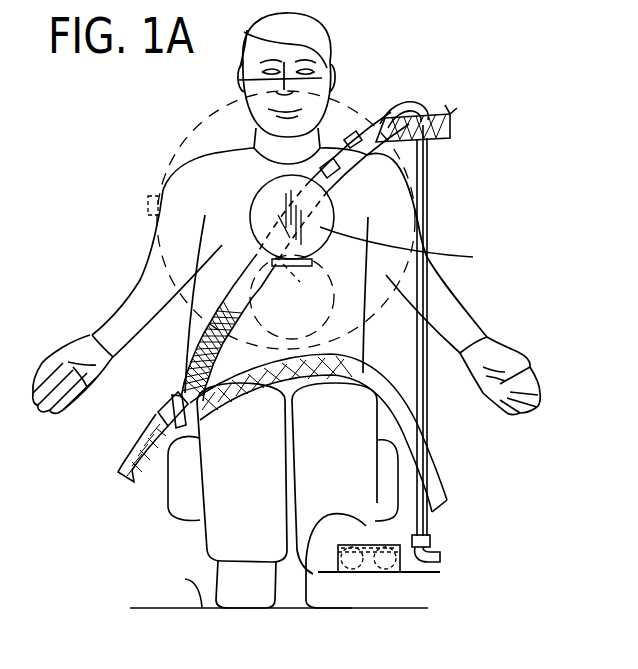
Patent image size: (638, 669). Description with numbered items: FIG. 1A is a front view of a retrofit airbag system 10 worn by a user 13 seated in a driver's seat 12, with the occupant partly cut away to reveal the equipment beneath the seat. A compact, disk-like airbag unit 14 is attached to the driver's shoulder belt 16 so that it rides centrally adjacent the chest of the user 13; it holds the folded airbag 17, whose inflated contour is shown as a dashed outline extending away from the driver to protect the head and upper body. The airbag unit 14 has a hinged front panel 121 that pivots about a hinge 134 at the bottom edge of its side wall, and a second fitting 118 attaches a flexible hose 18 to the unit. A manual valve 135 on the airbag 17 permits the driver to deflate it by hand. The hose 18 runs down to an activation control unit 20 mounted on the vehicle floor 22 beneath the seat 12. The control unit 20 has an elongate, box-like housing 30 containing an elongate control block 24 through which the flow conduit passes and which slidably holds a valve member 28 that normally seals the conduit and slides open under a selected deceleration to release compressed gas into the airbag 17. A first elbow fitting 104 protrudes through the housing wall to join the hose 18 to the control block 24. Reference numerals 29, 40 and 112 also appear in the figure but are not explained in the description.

The airbag system 10 is at (393, 88).
The driver's seat 12 is at (168, 503).
The user 13 is at (318, 27).
The airbag unit 14 is at (256, 204).
The shoulder belt 16 is at (431, 108).
The airbag 17 is at (175, 126).
The flexible hose 18 is at (430, 160).
The activation control unit 20 is at (347, 545).
The vehicle floor 22 is at (176, 584).
The control block 24 is at (361, 572).
The valve member 28 is at (392, 572).
The controller 29 is at (336, 548).
The housing 30 is at (352, 542).
The base plate 40 is at (402, 572).
The first elbow fitting 104 is at (440, 550).
The belt guide 112 is at (352, 137).
The second fitting 118 is at (326, 174).
The front panel 121 is at (360, 273).
The hinge 134 is at (292, 297).
The manual valve 135 is at (147, 206).